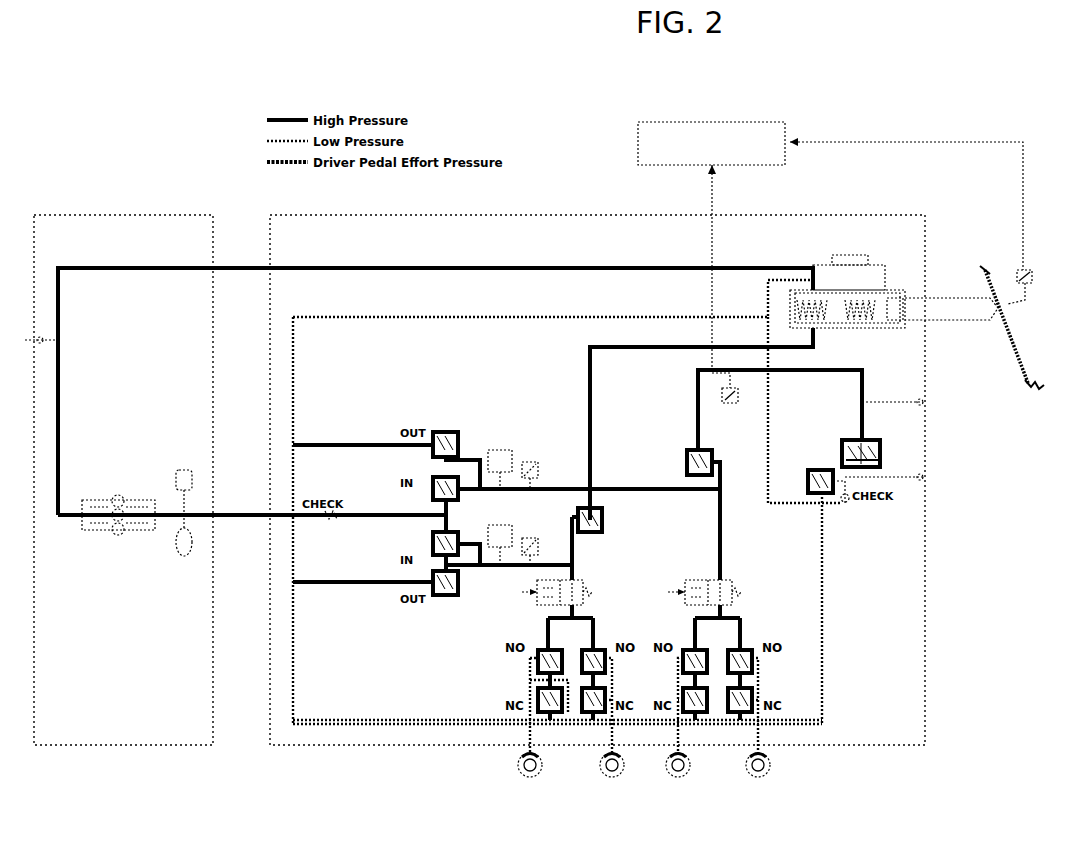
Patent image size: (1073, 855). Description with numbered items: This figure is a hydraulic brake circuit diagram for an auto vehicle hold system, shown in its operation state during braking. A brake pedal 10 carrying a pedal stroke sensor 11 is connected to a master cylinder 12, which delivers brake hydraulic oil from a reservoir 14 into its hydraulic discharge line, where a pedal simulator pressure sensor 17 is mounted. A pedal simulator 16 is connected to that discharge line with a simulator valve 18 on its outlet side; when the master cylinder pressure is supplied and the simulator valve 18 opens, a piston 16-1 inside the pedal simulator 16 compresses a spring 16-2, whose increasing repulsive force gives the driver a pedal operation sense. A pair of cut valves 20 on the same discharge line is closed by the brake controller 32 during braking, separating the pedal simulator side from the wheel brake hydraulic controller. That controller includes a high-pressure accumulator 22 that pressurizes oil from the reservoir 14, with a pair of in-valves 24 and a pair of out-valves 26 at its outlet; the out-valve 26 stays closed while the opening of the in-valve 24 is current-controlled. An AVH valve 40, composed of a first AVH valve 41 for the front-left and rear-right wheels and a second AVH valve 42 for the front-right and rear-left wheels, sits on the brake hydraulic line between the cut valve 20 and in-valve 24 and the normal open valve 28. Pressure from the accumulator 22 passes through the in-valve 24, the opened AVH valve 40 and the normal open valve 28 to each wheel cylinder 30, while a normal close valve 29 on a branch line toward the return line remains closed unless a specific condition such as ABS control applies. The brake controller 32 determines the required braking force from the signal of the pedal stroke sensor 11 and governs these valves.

The brake pedal 10 is at (1008, 348).
The pedal stroke sensor 11 is at (1017, 273).
The master cylinder 12 is at (882, 331).
The reservoir 14 is at (880, 265).
The pedal simulator 16 is at (843, 440).
The piston 16-1 is at (908, 446).
The spring 16-2 is at (882, 462).
The pedal simulator pressure sensor 17 is at (733, 404).
The simulator valve 18 is at (808, 472).
The cut valve 20 is at (687, 455).
The high-pressure accumulator 22 is at (176, 543).
The in-valve 24 is at (460, 538).
The out-valve 26 is at (460, 440).
The normal open valve 28 is at (602, 650).
The normal close valve 29 is at (600, 688).
The wheel cylinder 30 is at (518, 760).
The brake controller 32 is at (786, 127).
The AVH valve 40 is at (660, 552).
The first AVH valve 41 is at (580, 578).
The second AVH valve 42 is at (705, 578).